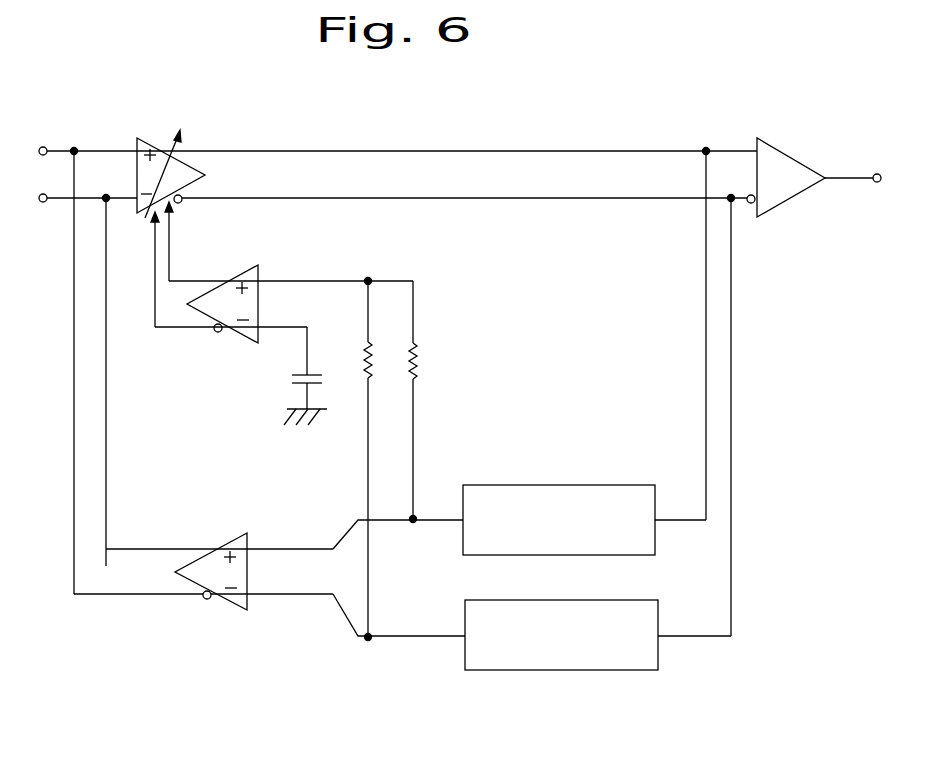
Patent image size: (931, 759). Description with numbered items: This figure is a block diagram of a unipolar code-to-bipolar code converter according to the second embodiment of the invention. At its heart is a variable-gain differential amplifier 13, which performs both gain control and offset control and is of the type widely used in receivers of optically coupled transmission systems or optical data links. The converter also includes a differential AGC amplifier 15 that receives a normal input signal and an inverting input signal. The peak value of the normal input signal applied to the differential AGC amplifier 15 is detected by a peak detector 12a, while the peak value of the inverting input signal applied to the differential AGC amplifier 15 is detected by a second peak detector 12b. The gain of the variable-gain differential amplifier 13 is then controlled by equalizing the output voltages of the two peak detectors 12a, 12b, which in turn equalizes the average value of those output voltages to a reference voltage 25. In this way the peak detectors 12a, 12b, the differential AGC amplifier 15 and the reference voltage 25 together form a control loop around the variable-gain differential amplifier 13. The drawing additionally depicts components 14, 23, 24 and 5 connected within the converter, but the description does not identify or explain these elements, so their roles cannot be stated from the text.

The variable-gain differential amplifier 13 is at (148, 138).
The operational amplifier 14 is at (227, 333).
The reference voltage 25 is at (289, 390).
The resistor 24 is at (387, 350).
The resistor 23 is at (423, 362).
The amplifier 5 is at (788, 205).
The peak detector 12a is at (575, 484).
The peak detector 12b is at (608, 671).
The differential AGC amplifier 15 is at (232, 540).